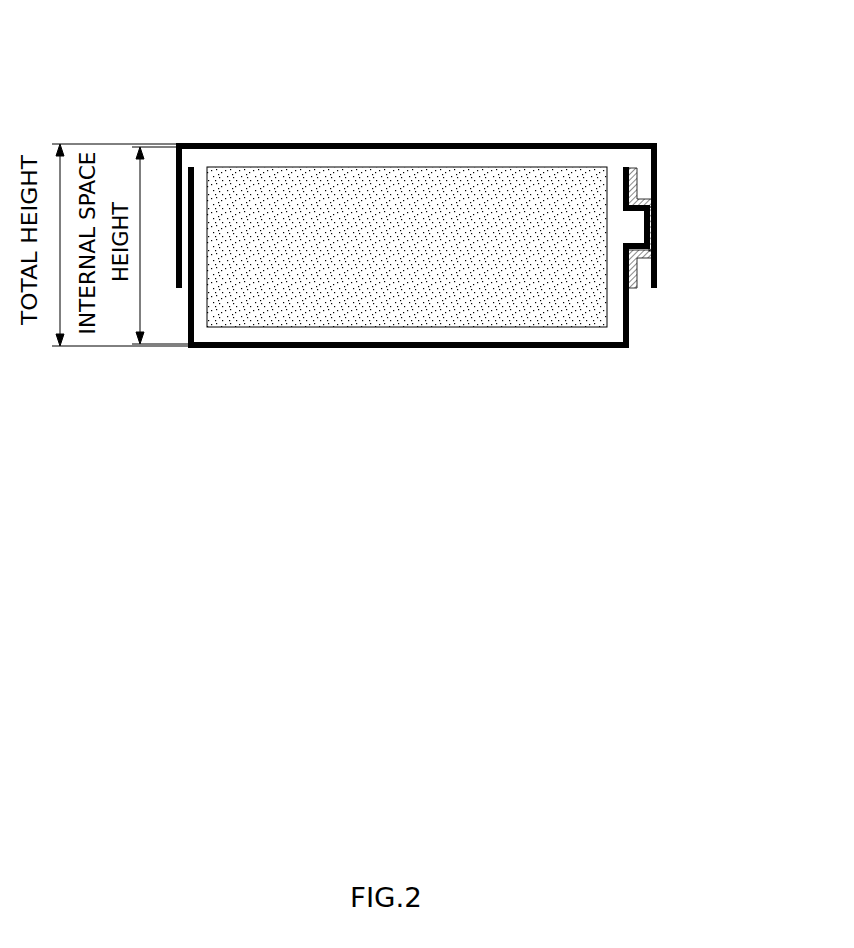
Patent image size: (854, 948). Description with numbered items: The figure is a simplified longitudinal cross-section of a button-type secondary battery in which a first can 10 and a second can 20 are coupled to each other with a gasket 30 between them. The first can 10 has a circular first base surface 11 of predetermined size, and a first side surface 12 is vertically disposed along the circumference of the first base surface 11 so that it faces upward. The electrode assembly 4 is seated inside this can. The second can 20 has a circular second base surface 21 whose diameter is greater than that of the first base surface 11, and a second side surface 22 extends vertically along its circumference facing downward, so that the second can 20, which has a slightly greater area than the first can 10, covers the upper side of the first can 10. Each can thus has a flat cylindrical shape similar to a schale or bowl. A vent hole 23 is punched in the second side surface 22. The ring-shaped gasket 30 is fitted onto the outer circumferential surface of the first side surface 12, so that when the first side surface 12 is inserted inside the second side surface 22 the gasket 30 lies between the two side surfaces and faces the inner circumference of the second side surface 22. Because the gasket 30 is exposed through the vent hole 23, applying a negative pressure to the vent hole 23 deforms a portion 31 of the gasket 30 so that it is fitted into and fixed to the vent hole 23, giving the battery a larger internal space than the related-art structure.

The electrode assembly 4 is at (407, 308).
The first can 10 is at (443, 317).
The first base surface 11 is at (365, 348).
The first side surface 12 is at (629, 326).
The second can 20 is at (450, 159).
The second base surface 21 is at (413, 143).
The second side surface 22 is at (658, 152).
The vent hole 23 is at (655, 255).
The gasket 30 is at (636, 180).
The portion of the gasket 31 is at (653, 224).